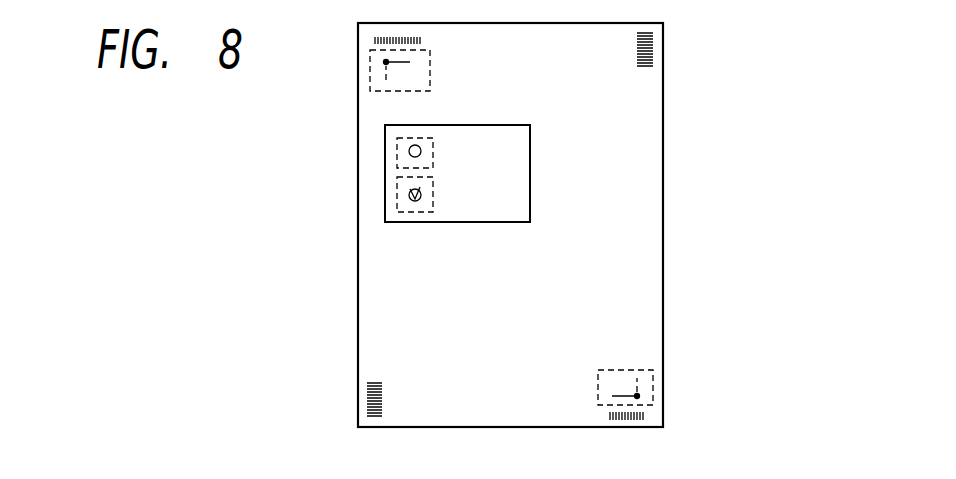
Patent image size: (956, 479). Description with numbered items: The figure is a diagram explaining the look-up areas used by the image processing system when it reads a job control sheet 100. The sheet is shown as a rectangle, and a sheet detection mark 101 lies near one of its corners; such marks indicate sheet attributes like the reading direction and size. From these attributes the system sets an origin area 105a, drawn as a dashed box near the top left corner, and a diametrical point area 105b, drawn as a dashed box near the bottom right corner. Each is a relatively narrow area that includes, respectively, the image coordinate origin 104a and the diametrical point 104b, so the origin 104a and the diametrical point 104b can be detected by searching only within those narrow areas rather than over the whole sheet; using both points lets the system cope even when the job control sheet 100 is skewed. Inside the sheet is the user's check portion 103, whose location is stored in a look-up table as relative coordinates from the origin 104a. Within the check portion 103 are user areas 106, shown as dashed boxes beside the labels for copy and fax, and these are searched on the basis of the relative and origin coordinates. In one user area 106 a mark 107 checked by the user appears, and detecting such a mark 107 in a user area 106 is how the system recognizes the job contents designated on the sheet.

The job control sheet 100 is at (668, 102).
The sheet detection mark 101 is at (652, 42).
The user's check portion 103 is at (420, 143).
The image coordinate origin 104a is at (386, 62).
The diametrical point 104b is at (637, 396).
The origin area 105a is at (402, 91).
The diametrical point area 105b is at (640, 369).
The user area 106 is at (397, 155).
The mark 107 is at (420, 190).